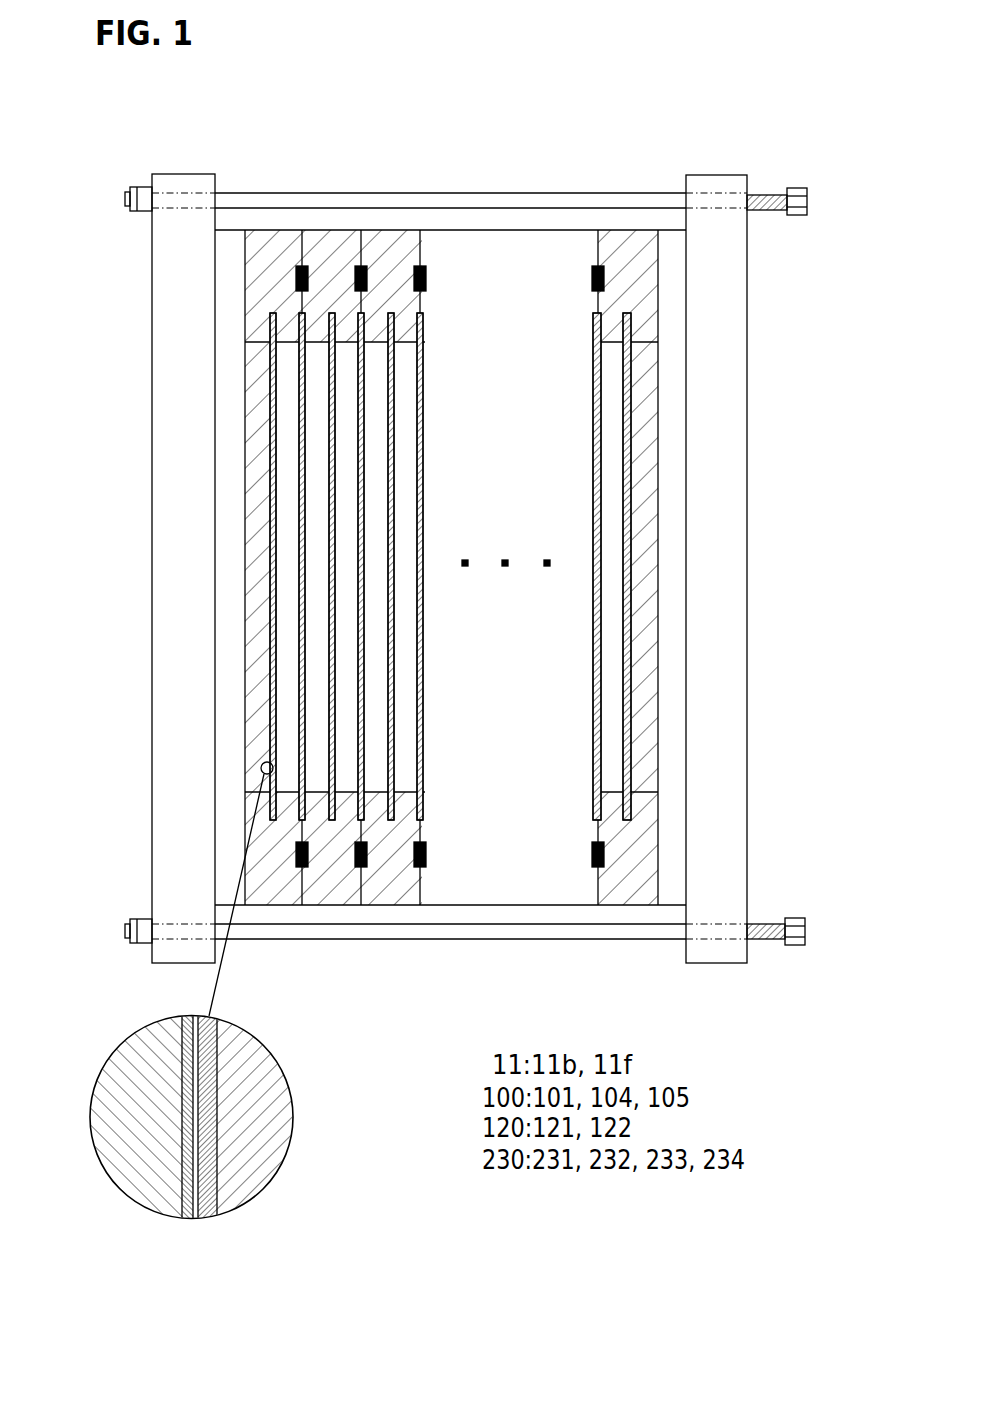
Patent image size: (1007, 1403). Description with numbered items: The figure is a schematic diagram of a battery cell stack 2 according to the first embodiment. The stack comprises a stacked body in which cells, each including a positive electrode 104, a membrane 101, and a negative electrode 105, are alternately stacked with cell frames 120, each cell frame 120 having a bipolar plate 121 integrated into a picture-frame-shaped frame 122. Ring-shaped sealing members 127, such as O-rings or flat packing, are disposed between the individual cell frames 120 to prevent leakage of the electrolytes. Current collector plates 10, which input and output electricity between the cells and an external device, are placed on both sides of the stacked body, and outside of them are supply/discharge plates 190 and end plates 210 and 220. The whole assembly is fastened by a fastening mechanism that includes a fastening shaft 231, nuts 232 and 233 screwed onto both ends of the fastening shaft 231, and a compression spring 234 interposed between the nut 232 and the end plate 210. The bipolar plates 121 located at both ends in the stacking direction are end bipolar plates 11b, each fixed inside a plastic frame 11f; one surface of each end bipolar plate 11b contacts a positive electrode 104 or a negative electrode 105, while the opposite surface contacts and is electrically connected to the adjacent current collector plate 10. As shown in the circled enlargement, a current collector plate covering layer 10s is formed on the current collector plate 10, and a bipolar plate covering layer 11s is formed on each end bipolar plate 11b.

The battery cell stack 2 is at (455, 176).
The current collector plate 10 is at (250, 667).
The current collector plate covering layer 10s is at (185, 1017).
The end bipolar plate 11b is at (270, 708).
The frame 11f is at (272, 230).
The bipolar plate covering layer 11s is at (210, 1017).
The membrane 101 is at (305, 492).
The positive electrode 104 is at (283, 461).
The negative electrode 105 is at (318, 521).
The cell frame 120 is at (444, 663).
The bipolar plate 121 is at (447, 766).
The frame 122 is at (400, 242).
The sealing member 127 is at (430, 277).
The supply/discharge plate 190 is at (223, 370).
The end plate 210 is at (738, 498).
The end plate 220 is at (157, 427).
The fastening shaft 231 is at (440, 939).
The nut 232 is at (797, 946).
The nut 233 is at (130, 917).
The compression spring 234 is at (789, 920).